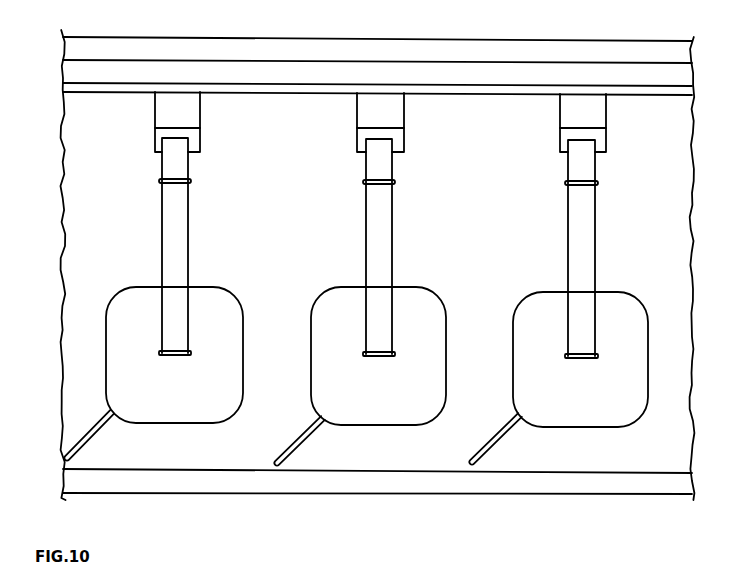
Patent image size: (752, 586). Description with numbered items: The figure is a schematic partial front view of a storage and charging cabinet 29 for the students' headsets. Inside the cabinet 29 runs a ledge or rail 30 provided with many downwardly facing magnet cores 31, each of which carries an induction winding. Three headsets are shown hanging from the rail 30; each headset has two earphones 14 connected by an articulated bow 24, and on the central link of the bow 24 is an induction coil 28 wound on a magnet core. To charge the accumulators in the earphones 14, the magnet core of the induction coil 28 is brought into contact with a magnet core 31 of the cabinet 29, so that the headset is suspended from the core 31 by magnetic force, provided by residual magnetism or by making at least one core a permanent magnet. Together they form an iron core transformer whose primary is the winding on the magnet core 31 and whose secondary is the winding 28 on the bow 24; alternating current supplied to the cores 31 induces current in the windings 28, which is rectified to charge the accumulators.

The earphones 14 is at (402, 302).
The bow 24 is at (382, 212).
The induction coil 28 is at (563, 145).
The storage and charging cabinet 29 is at (453, 455).
The ledge or rail 30 is at (490, 88).
The magnet cores 31 is at (575, 110).